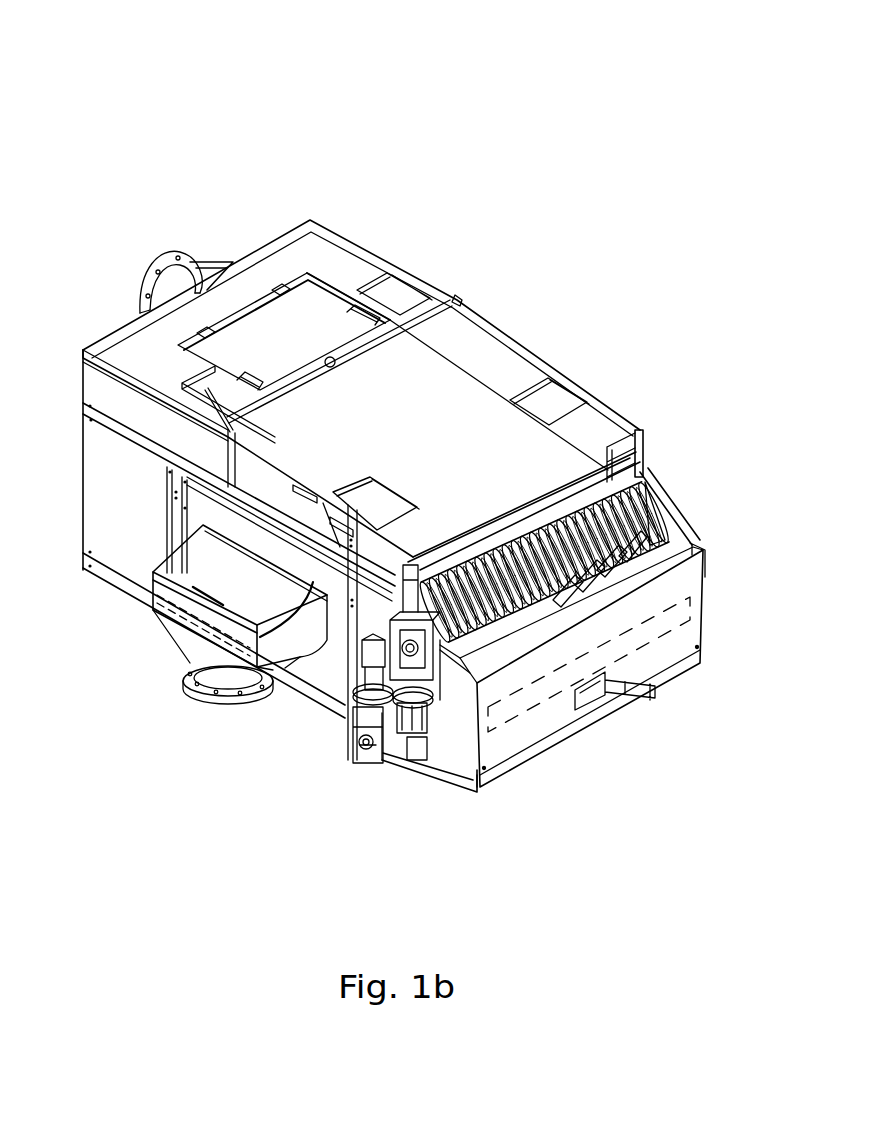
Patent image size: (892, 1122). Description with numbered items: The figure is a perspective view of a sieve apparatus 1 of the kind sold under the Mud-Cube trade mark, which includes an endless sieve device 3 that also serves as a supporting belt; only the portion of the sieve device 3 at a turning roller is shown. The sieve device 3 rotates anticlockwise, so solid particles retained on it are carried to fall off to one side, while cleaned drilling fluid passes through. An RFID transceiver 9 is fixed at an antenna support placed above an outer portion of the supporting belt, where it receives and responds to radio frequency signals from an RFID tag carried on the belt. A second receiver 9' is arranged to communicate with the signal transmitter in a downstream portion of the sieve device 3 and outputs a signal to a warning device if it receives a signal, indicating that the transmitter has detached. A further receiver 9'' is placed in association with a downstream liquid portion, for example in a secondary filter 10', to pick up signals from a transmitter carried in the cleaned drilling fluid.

The sieve apparatus 1 is at (122, 148).
The sieve device 3 is at (662, 498).
The RFID transceiver 9 is at (576, 420).
The second receiver 9' is at (572, 724).
The further receiver 9'' is at (240, 691).
The secondary filter 10' is at (91, 695).